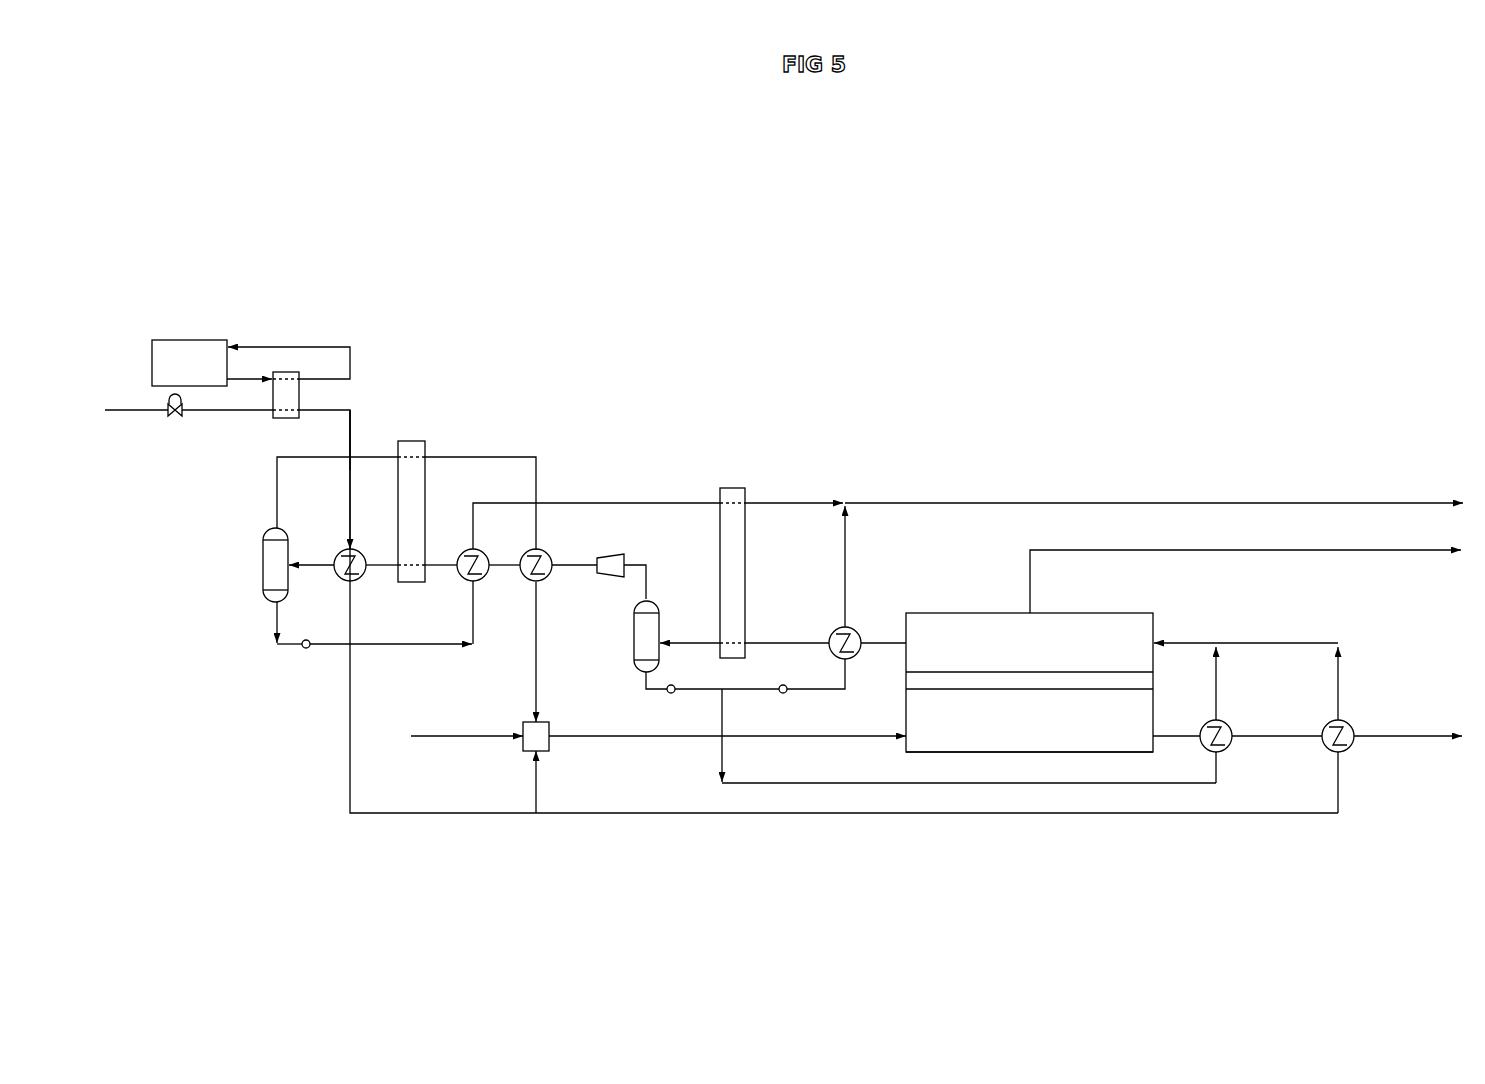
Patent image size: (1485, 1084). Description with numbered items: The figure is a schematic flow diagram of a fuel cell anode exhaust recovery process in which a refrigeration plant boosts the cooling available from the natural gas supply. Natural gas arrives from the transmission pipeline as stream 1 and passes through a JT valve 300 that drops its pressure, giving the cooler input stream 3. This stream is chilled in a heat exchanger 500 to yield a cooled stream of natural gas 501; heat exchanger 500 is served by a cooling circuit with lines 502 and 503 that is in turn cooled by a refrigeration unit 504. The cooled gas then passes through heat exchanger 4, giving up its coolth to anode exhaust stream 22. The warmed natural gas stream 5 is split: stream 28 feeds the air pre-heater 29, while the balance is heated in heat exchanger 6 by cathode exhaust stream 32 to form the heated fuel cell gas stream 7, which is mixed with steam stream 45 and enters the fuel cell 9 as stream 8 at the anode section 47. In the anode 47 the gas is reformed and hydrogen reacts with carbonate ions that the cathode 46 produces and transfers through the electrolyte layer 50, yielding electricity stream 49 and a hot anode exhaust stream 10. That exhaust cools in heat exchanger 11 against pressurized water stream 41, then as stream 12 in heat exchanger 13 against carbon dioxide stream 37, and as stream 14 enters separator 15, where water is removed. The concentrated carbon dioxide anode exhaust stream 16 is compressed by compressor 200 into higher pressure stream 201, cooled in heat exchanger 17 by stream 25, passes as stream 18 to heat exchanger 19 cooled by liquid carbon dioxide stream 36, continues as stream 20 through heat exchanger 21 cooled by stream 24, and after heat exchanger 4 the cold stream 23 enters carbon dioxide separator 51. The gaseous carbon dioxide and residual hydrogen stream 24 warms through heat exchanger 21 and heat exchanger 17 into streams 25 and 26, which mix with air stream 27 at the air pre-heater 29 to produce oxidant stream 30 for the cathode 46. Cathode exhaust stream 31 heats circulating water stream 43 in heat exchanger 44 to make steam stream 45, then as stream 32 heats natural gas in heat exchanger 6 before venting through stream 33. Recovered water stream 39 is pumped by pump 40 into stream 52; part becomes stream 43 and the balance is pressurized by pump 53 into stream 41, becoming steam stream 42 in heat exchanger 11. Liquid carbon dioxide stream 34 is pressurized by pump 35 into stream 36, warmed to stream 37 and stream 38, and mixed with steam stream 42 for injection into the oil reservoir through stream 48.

The natural gas supply stream 1 is at (138, 416).
The JT valve 300 is at (175, 418).
The input stream 3 is at (220, 417).
The heat exchanger 500 is at (277, 423).
The cooled stream of natural gas 501 is at (355, 420).
The cooling circuit line 502 is at (256, 381).
The cooling circuit line 503 is at (357, 368).
The refrigeration unit 504 is at (149, 356).
The gaseous cold carbon dioxide and residual hydrogen stream 24 is at (271, 470).
The warmer stream 25 is at (478, 455).
The heat exchanger 21 is at (428, 502).
The heat exchanger 4 is at (361, 548).
The cold concentrated carbon dioxide anode exhaust stream 23 is at (313, 572).
The anode exhaust stream 22 is at (380, 572).
The anode exhaust stream 20 is at (438, 558).
The heat exchanger 19 is at (484, 548).
The colder concentrated carbon dioxide anode exhaust 18 is at (500, 572).
The heat exchanger 17 is at (551, 552).
The higher pressure stream 201 is at (585, 560).
The compressor 200 is at (625, 551).
The concentrated carbon dioxide anode exhaust stream 16 is at (651, 587).
The carbon dioxide separator 51 is at (254, 567).
The recovered carbon dioxide liquid stream 34 is at (267, 644).
The pump 35 is at (300, 653).
The pressurized liquid carbon dioxide stream 36 is at (425, 650).
The natural gas stream 5 is at (355, 725).
The separator 15 is at (628, 643).
The cooler anode exhaust stream 14 is at (678, 638).
The recovered water stream 39 is at (640, 682).
The pump 40 is at (665, 700).
The water stream 52 is at (688, 687).
The pump 53 is at (785, 681).
The pressurized water stream 41 is at (818, 696).
The circulating water stream 43 is at (737, 777).
The warmer carbon dioxide stream 37 is at (602, 498).
The hot carbon dioxide stream 38 is at (777, 498).
The heat exchanger 13 is at (752, 568).
The cooler anode exhaust stream 12 is at (788, 637).
The steam stream 42 is at (850, 563).
The heat exchanger 11 is at (855, 625).
The hot anode exhaust stream 10 is at (880, 638).
The injection stream 48 is at (1127, 498).
The electricity stream 49 is at (1109, 547).
The fuel cell 9 is at (1087, 610).
The anode section 47 is at (974, 637).
The electrolyte layer 50 is at (1018, 683).
The cathode 46 is at (935, 735).
The oxidant stream 30 is at (663, 744).
The air pre-heater 29 is at (552, 747).
The heated gaseous carbon dioxide and residual hydrogen stream 26 is at (542, 675).
The air stream 27 is at (468, 745).
The natural gas stream 28 is at (523, 777).
The natural gas/steam stream 8 is at (1192, 637).
The heated fuel cell gas stream 7 is at (1343, 679).
The steam stream 45 is at (1222, 702).
The heat exchanger 44 is at (1198, 752).
The cathode exhaust stream 31 is at (1168, 728).
The cathode exhaust stream 32 is at (1265, 743).
The heat exchanger 6 is at (1355, 752).
The exhaust stream 33 is at (1385, 728).